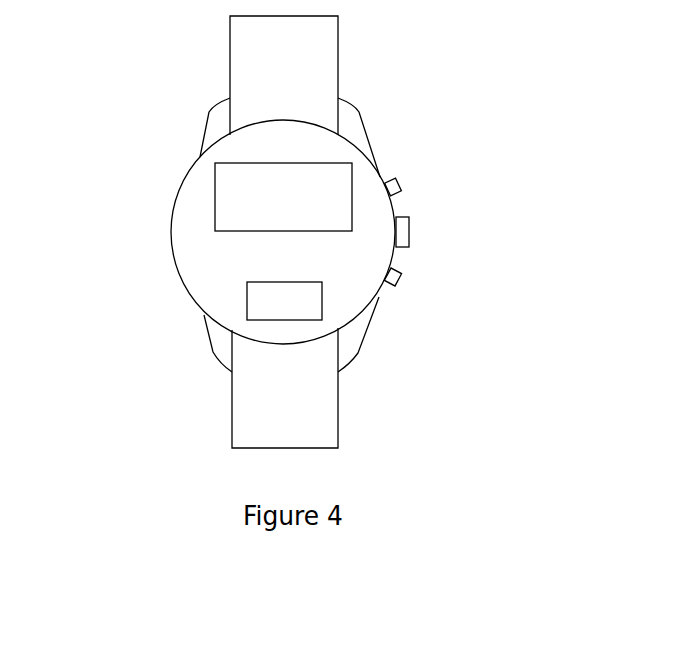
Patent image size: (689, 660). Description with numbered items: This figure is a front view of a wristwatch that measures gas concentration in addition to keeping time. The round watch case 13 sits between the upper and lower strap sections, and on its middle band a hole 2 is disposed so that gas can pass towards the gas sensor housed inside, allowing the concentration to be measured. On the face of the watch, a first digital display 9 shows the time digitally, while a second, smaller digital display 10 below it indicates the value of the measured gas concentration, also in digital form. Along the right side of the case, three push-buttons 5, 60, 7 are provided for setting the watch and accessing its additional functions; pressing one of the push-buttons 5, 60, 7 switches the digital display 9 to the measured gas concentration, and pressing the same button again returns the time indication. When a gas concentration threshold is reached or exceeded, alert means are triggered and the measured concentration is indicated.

The hole 2 is at (382, 297).
The watch case 13 is at (202, 157).
The digital display 9 is at (223, 170).
The digital display 10 is at (252, 290).
The push-button 5 is at (395, 183).
The push-button 60 is at (404, 226).
The push-button 7 is at (399, 275).